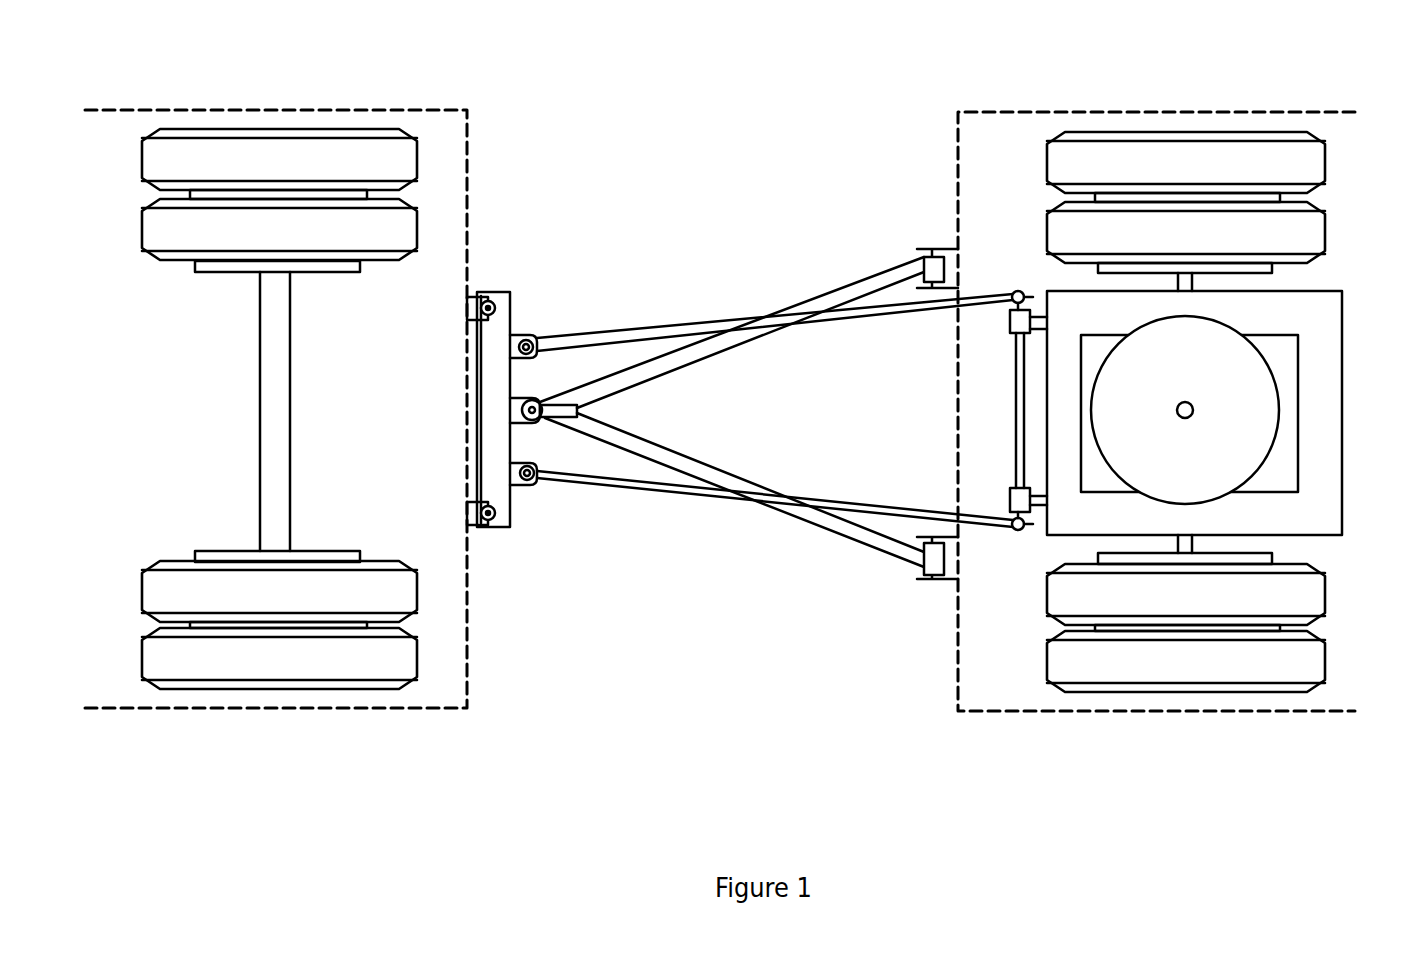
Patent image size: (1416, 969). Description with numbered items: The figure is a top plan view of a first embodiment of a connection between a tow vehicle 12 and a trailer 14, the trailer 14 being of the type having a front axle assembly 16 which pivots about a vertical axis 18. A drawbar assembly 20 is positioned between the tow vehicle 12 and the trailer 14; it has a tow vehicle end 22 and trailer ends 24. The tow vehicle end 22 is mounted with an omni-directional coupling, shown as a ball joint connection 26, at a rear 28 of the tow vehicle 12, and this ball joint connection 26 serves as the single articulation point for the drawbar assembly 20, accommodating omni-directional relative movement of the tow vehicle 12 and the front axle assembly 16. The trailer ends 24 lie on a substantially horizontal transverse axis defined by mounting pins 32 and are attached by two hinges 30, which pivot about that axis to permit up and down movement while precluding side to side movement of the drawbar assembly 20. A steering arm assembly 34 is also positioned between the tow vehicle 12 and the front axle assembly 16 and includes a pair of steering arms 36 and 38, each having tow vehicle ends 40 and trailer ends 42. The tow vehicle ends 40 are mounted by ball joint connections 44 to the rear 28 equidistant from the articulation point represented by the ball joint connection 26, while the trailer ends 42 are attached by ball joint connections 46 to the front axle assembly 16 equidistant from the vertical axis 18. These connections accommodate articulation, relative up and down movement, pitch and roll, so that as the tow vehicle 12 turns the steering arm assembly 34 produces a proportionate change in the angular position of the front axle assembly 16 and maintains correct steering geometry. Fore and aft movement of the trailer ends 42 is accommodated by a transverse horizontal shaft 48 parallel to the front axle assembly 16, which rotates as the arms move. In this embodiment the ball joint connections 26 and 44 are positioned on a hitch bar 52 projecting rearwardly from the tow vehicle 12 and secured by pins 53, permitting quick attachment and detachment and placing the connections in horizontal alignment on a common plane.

The tow vehicle 12 is at (117, 693).
The trailer 14 is at (1105, 702).
The front axle assembly 16 is at (1187, 283).
The vertical axis 18 is at (1190, 408).
The drawbar assembly 20 is at (732, 363).
The tow vehicle end 22 is at (580, 415).
The trailer ends 24 is at (893, 548).
The ball joint connection 26 is at (540, 403).
The rear 28 is at (457, 628).
The hinges 30 is at (933, 555).
The mounting pins 32 is at (932, 577).
The steering arm assembly 34 is at (720, 317).
The steering arm 36 is at (688, 330).
The steering arm 38 is at (687, 488).
The tow vehicle ends 40 is at (565, 510).
The trailer ends 42 is at (997, 522).
The ball joint connections 44 is at (538, 540).
The ball joint connections 46 is at (1017, 532).
The transverse horizontal shaft 48 is at (1017, 440).
The hitch bar 52 is at (492, 477).
The pins 53 is at (520, 597).